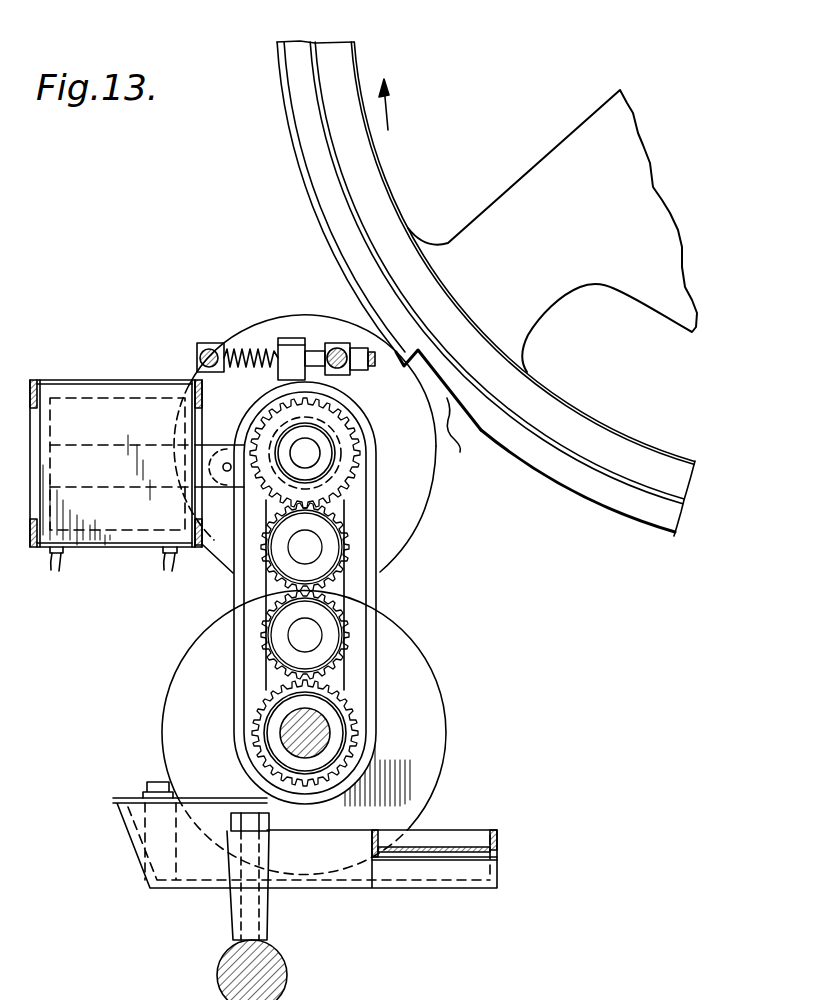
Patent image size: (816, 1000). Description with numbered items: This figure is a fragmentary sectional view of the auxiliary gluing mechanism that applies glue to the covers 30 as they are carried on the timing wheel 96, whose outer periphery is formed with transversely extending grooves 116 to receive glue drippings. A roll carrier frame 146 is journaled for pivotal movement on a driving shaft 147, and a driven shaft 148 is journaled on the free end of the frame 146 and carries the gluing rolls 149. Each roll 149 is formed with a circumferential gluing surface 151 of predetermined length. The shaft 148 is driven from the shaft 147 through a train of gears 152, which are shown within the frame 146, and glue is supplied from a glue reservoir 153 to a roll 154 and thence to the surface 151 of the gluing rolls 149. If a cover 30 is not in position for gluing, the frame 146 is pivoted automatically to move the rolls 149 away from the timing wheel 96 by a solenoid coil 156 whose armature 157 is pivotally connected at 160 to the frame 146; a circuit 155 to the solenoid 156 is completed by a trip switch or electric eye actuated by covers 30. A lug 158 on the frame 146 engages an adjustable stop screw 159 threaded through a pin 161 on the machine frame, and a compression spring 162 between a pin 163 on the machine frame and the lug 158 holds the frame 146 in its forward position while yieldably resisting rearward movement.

The cover 30 is at (282, 120).
The timing wheel 96 is at (545, 176).
The transversely extending grooves 116 is at (460, 452).
The roll carrier frame 146 is at (377, 600).
The driving shaft 147 is at (312, 728).
The driven shaft 148 is at (312, 453).
The gluing rolls 149 is at (415, 502).
The circumferential gluing surface 151 is at (383, 568).
The train of gears 152 is at (345, 465).
The glue reservoir 153 is at (134, 845).
The roll 154 is at (425, 655).
The circuit 155 is at (163, 568).
The solenoid coil 156 is at (107, 366).
The armature 157 is at (209, 445).
The lug 158 is at (292, 338).
The adjustable stop screw 159 is at (376, 362).
The pivotal connection 160 is at (226, 472).
The pin 161 is at (342, 343).
The compression spring 162 is at (267, 343).
The pin 163 is at (200, 340).